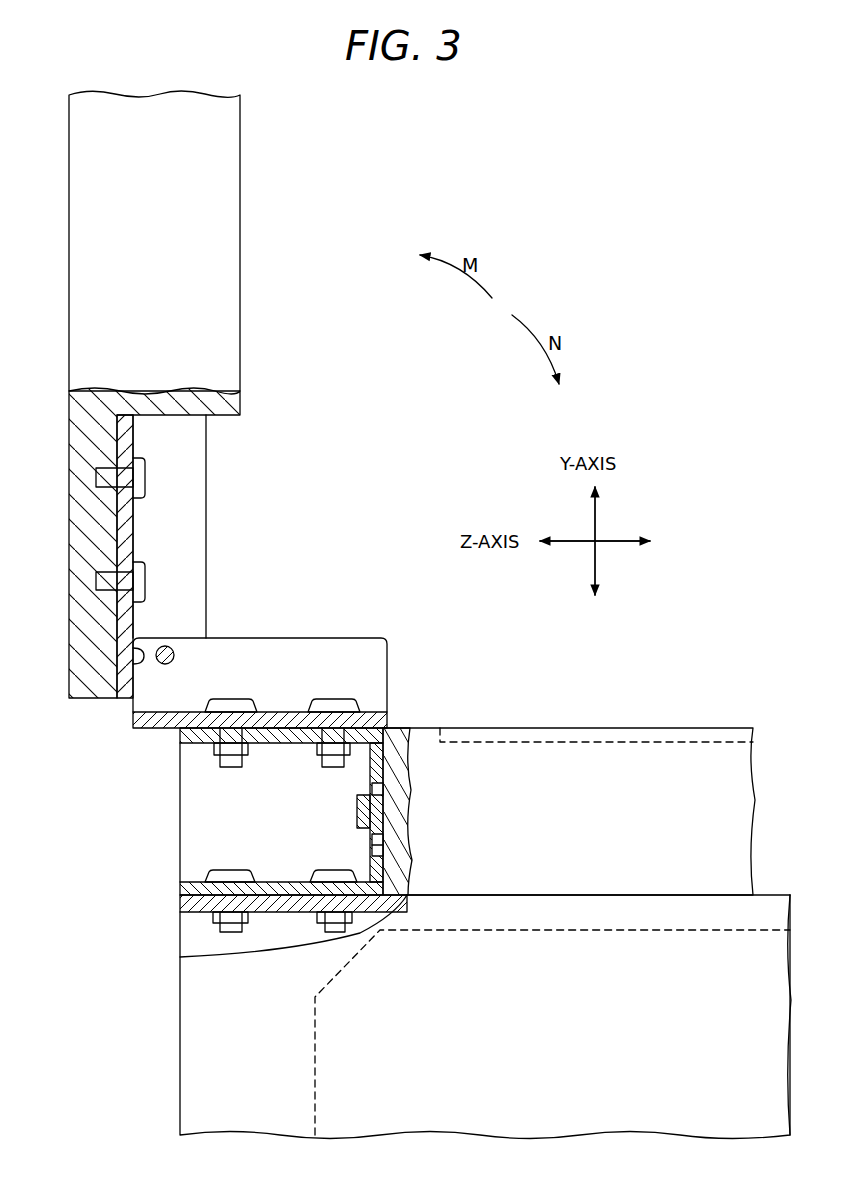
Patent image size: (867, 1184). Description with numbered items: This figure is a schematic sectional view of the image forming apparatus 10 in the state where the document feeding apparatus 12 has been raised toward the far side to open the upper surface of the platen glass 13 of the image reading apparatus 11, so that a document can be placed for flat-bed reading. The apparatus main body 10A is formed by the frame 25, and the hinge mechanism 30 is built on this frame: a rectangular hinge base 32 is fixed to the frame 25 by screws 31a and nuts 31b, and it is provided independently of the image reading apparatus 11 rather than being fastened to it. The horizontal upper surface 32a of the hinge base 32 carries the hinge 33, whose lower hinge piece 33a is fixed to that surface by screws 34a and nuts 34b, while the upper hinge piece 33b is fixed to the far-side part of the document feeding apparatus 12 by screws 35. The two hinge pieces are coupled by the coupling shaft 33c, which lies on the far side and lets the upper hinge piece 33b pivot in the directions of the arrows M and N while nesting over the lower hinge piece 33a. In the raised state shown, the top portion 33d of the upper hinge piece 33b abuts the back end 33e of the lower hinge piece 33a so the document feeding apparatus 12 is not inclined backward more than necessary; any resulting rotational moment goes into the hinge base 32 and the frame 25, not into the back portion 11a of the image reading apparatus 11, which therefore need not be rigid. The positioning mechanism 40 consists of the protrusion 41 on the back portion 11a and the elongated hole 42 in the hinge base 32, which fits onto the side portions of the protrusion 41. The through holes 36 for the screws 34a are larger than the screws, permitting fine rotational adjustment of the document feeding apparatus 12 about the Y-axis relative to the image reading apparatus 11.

The image forming apparatus 10 is at (396, 516).
The apparatus main body 10A is at (172, 1045).
The image reading apparatus 11 is at (709, 717).
The back portion 11a is at (388, 858).
The document feeding apparatus 12 is at (255, 304).
The platen glass 13 is at (607, 727).
The frame 25 is at (208, 997).
The hinge mechanism 30 is at (112, 737).
The screws 31a is at (315, 871).
The nuts 31b is at (318, 917).
The hinge base 32 is at (180, 832).
The upper surface 32a is at (190, 707).
The hinge 33 is at (366, 597).
The lower hinge piece 33a is at (316, 640).
The upper hinge piece 33b is at (194, 561).
The coupling shaft 33c is at (170, 646).
The top portion 33d is at (133, 652).
The back end 33e is at (133, 683).
The screws 34a is at (307, 710).
The nuts 34b is at (217, 752).
The screws 35 is at (147, 587).
The through holes 36 is at (232, 758).
The positioning mechanism 40 is at (283, 800).
The protrusion 41 is at (357, 820).
The elongated hole 42 is at (370, 790).